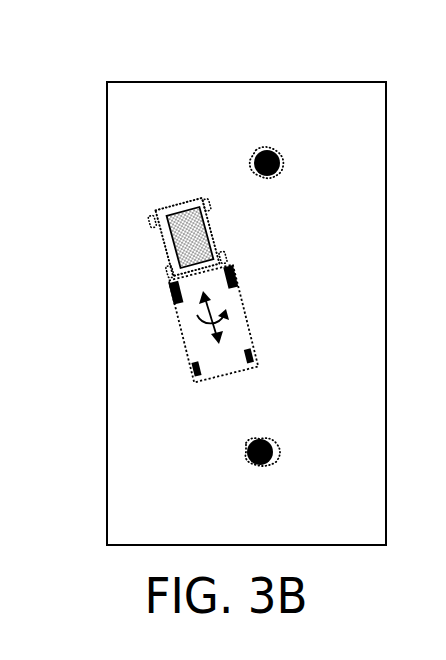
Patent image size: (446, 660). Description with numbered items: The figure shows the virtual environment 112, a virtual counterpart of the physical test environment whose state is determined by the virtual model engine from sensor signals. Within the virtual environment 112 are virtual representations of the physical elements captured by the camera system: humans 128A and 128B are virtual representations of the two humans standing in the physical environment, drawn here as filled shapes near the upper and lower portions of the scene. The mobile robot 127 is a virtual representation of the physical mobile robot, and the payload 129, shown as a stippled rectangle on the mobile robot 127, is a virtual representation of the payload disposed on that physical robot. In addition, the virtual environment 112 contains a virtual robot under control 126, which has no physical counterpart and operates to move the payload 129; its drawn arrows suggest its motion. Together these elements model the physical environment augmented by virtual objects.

The virtual environment 112 is at (101, 58).
The virtual robot under control 126 is at (242, 307).
The mobile robot 127 is at (178, 204).
The human 128A is at (281, 172).
The human 128B is at (281, 455).
The payload 129 is at (204, 236).